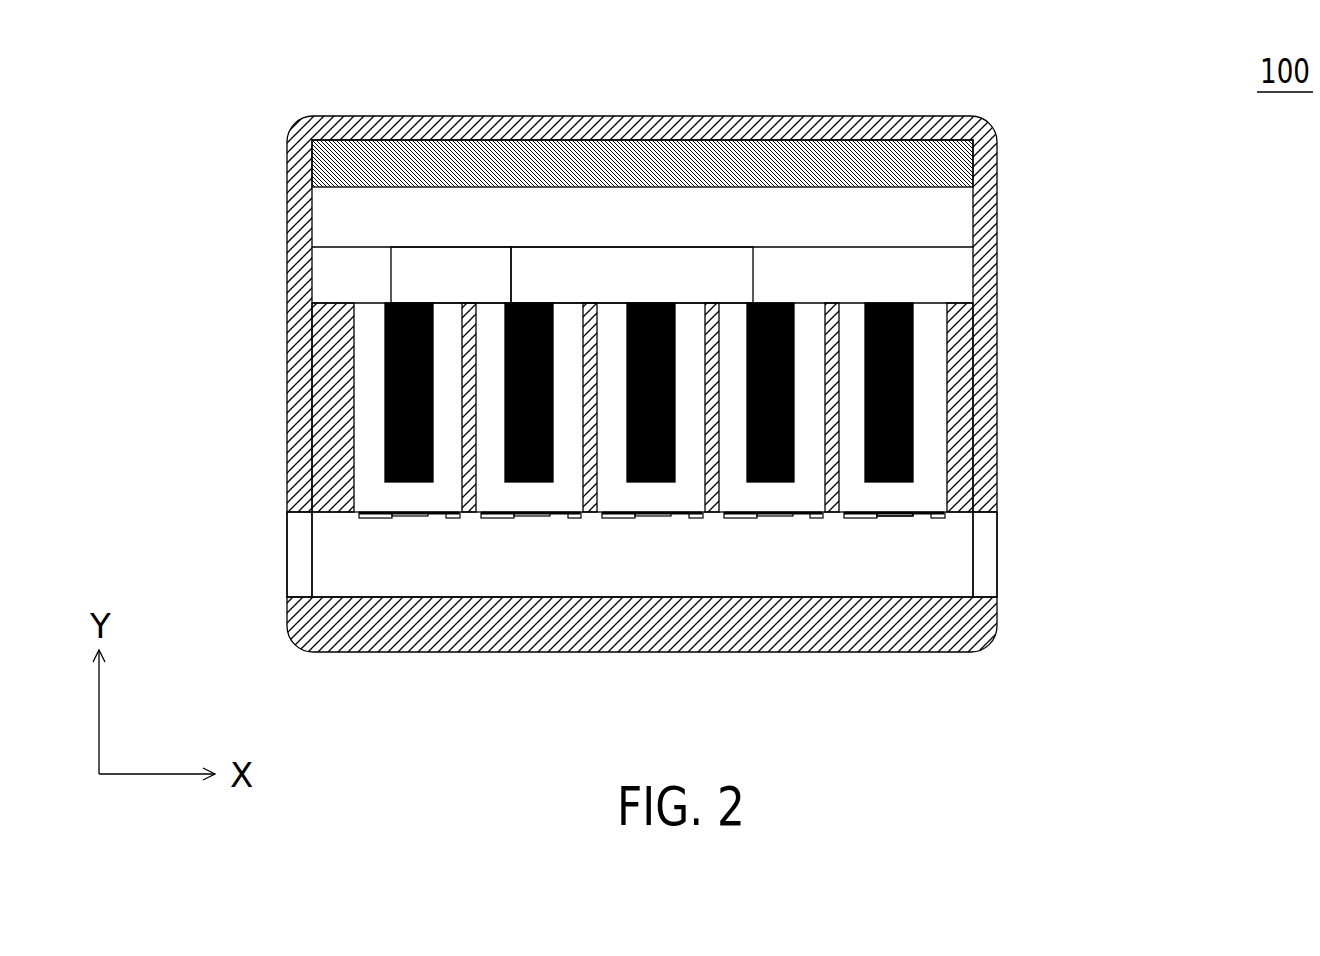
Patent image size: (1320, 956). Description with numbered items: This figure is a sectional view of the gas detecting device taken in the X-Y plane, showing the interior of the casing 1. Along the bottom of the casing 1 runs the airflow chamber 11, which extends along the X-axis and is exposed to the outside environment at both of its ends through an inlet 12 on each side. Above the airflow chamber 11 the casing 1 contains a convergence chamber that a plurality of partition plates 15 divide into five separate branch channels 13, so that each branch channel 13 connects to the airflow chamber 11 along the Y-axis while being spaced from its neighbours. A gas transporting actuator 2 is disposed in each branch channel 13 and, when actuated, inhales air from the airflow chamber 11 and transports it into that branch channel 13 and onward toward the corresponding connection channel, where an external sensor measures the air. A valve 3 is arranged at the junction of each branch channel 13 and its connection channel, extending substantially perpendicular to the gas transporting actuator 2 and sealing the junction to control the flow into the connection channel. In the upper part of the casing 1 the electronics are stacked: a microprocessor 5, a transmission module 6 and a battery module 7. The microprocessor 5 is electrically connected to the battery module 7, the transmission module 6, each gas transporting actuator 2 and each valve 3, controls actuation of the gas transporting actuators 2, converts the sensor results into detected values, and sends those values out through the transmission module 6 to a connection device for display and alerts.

The casing 1 is at (993, 390).
The gas transporting actuator 2 is at (910, 516).
The valve 3 is at (913, 400).
The microprocessor 5 is at (632, 260).
The transmission module 6 is at (432, 257).
The battery module 7 is at (380, 162).
The airflow chamber 11 is at (723, 553).
The inlet 12 is at (305, 568).
The branch channel 13 is at (918, 487).
The partition plate 15 is at (843, 502).